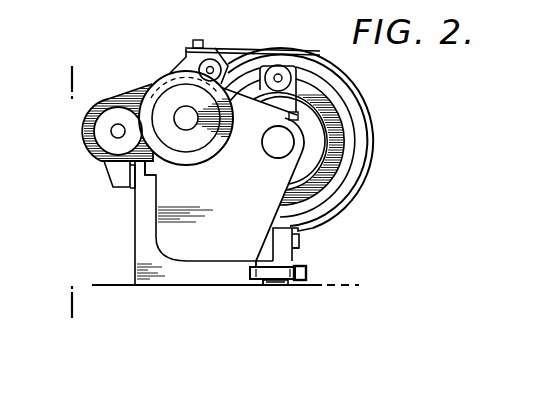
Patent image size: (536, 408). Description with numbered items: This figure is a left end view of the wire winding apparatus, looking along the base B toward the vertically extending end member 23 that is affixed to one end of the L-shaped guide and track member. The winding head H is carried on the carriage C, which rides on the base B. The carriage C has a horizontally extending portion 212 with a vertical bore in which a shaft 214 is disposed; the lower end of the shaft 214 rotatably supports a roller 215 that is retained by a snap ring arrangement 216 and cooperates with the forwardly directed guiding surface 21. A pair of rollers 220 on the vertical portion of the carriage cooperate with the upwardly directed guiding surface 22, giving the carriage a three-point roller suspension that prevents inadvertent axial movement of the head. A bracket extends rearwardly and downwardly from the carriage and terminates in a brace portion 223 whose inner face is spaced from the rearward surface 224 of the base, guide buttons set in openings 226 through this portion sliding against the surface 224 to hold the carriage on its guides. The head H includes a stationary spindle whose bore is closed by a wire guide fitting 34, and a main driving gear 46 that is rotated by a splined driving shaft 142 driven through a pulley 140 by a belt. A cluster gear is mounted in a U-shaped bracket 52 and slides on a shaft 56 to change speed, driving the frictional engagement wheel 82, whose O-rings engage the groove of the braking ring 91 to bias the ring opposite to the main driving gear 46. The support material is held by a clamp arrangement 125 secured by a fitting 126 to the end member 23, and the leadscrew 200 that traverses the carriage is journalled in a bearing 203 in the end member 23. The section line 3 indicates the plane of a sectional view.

The section line 3- 3 is at (60, 78).
The forwardly directed guiding surface 21 is at (255, 272).
The upwardly directed guiding surface 22 is at (155, 161).
The end member 23 is at (185, 238).
The wire guide fitting 34 is at (263, 111).
The main driving gear 46 is at (349, 153).
The U-shaped bracket 52 is at (176, 64).
The shaft 56 is at (209, 67).
The frictional engagement wheel 82 is at (279, 65).
The braking ring 91 is at (310, 100).
The clamp arrangement 125 is at (297, 112).
The fitting 126 is at (270, 151).
The pulley 140 is at (213, 162).
The splined driving shaft 142 is at (183, 116).
The leadscrew 200 is at (118, 131).
The bearing 203 is at (107, 116).
The horizontally extending portion 212 is at (272, 243).
The shaft 214 is at (282, 286).
The roller 215 is at (307, 273).
The snap ring arrangement 216 is at (266, 285).
The rollers 220 is at (158, 180).
The brace portion 223 is at (118, 168).
The rearward surface 224 is at (134, 220).
The openings 226 is at (130, 187).
The base B is at (163, 289).
The carriage C is at (308, 258).
The winding head H is at (352, 112).